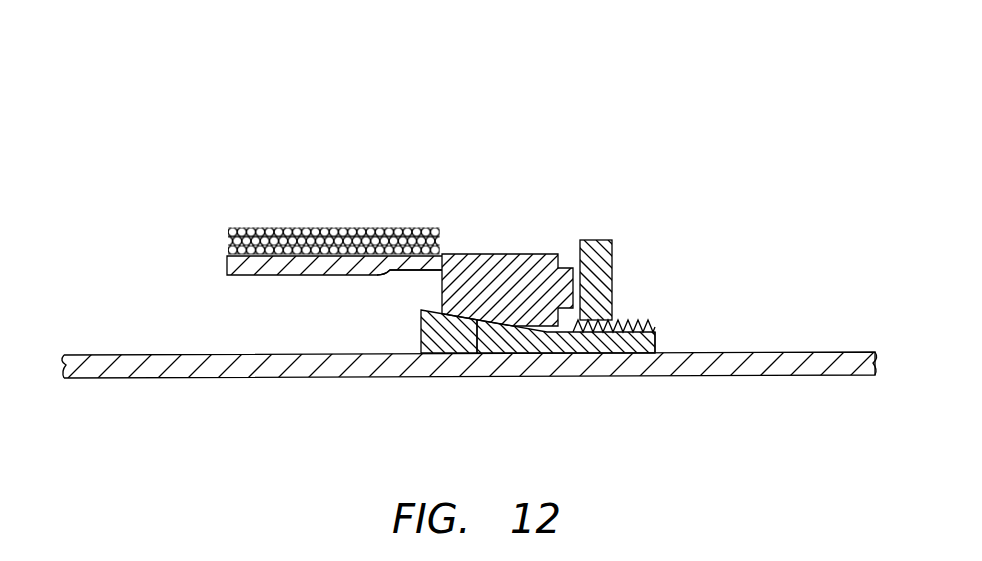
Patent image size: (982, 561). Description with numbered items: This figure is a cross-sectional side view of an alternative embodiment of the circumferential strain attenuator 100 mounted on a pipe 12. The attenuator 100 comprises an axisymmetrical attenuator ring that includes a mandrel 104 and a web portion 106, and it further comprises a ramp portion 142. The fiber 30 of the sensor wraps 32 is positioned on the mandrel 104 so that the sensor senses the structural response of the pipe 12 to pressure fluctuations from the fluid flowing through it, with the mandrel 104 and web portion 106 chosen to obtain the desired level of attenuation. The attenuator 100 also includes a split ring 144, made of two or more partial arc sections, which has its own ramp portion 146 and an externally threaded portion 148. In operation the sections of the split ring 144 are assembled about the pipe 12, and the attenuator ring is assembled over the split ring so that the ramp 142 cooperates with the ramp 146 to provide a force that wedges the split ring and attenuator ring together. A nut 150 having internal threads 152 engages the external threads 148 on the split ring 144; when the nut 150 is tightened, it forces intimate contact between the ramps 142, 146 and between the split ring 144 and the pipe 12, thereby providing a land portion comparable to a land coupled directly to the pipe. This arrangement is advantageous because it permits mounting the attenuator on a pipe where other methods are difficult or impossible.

The attenuator 100 is at (623, 102).
The pipe 12 is at (128, 355).
The fiber 30 is at (228, 233).
The sensor wraps 32 is at (306, 206).
The mandrel 104 is at (265, 276).
The web portion 106 is at (398, 272).
The ramp portion 142 is at (463, 316).
The split ring 144 is at (530, 345).
The ramp portion 146 is at (475, 347).
The externally threaded portion 148 is at (655, 328).
The nut 150 is at (602, 254).
The internal threads 152 is at (600, 328).